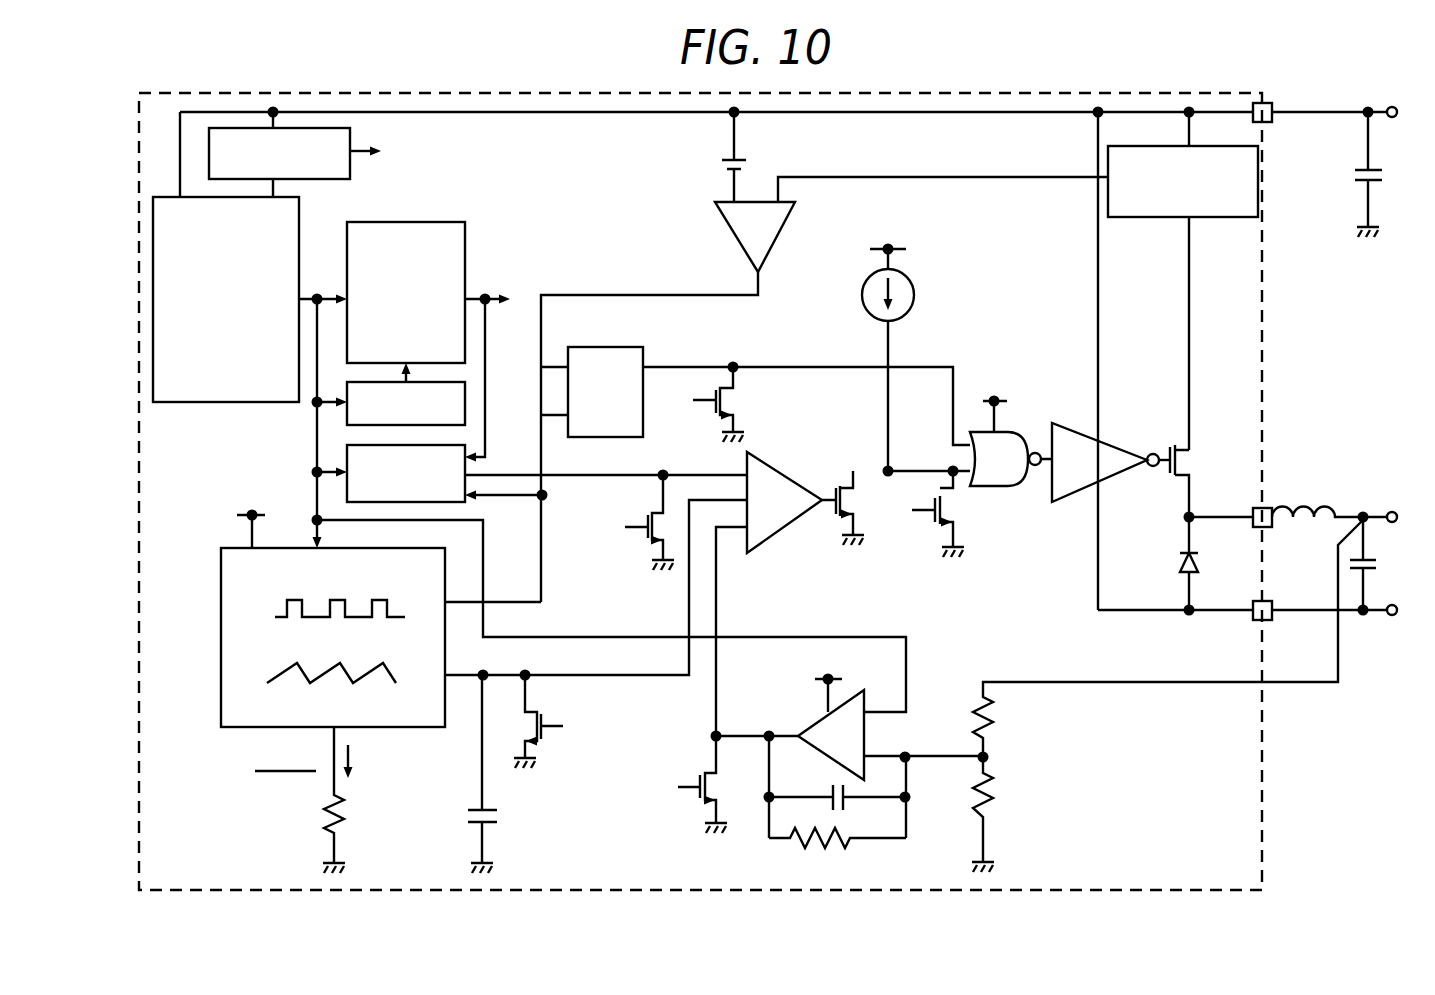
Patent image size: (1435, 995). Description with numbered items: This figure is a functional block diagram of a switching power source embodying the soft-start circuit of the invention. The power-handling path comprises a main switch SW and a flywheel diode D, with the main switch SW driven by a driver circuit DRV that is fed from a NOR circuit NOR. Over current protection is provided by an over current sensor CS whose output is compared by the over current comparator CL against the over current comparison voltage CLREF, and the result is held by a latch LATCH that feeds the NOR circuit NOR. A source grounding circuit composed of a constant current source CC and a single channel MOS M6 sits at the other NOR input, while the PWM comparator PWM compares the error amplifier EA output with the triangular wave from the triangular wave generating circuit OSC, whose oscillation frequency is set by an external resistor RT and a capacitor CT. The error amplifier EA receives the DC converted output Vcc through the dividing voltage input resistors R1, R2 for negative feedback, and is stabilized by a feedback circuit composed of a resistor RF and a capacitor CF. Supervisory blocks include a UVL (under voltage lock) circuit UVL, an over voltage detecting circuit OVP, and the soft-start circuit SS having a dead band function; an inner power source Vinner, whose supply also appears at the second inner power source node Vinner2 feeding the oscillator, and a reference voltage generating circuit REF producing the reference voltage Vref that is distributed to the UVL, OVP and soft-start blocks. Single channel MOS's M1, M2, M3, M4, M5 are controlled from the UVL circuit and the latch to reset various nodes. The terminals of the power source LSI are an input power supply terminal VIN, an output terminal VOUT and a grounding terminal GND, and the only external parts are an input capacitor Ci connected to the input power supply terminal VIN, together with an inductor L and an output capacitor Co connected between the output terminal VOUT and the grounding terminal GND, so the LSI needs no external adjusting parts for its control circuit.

The inner power source Vinner is at (352, 141).
The inner power supply terminal to oscillator Vinner2 is at (266, 499).
The reference voltage generating circuit REF is at (206, 402).
The reference voltage Vref is at (326, 292).
The UVL (under voltage lock) circuit UVL is at (413, 222).
The over voltage detecting circuit OVP is at (465, 404).
The soft-start circuit SS is at (347, 455).
The triangular wave generating circuit OSC is at (221, 623).
The resistor RT is at (345, 814).
The capacitor CT is at (494, 809).
The single channel MOS M1 is at (650, 546).
The single channel MOS M2 is at (548, 712).
The single channel MOS M3 is at (703, 770).
The single channel MOS M4 is at (735, 393).
The single channel MOS M5 is at (844, 520).
The single channel MOS M6 is at (955, 504).
The latch circuit LATCH is at (628, 327).
The over current comparison voltage CLREF is at (746, 158).
The over current comparator CL is at (727, 230).
The constant current source CC is at (914, 298).
The PWM comparator PWM is at (766, 462).
The NOR circuit NOR is at (987, 381).
The driver circuit DRV is at (1118, 440).
The main switch SW is at (1183, 453).
The output terminal VOUT is at (1263, 507).
The inductor L is at (1305, 505).
The DC converted output Vcc is at (1393, 510).
The flywheel diode D is at (1198, 563).
The grounding terminal GND is at (1272, 622).
The output capacitor Co is at (1376, 560).
The input power supply terminal VIN is at (1272, 106).
The input capacitor Ci is at (1378, 170).
The over current sensor CS is at (1152, 217).
The dividing voltage input resistor R1 is at (993, 722).
The dividing voltage input resistor R2 is at (993, 800).
The error amplifier EA is at (812, 724).
The capacitor CF is at (845, 805).
The resistor RF is at (850, 842).